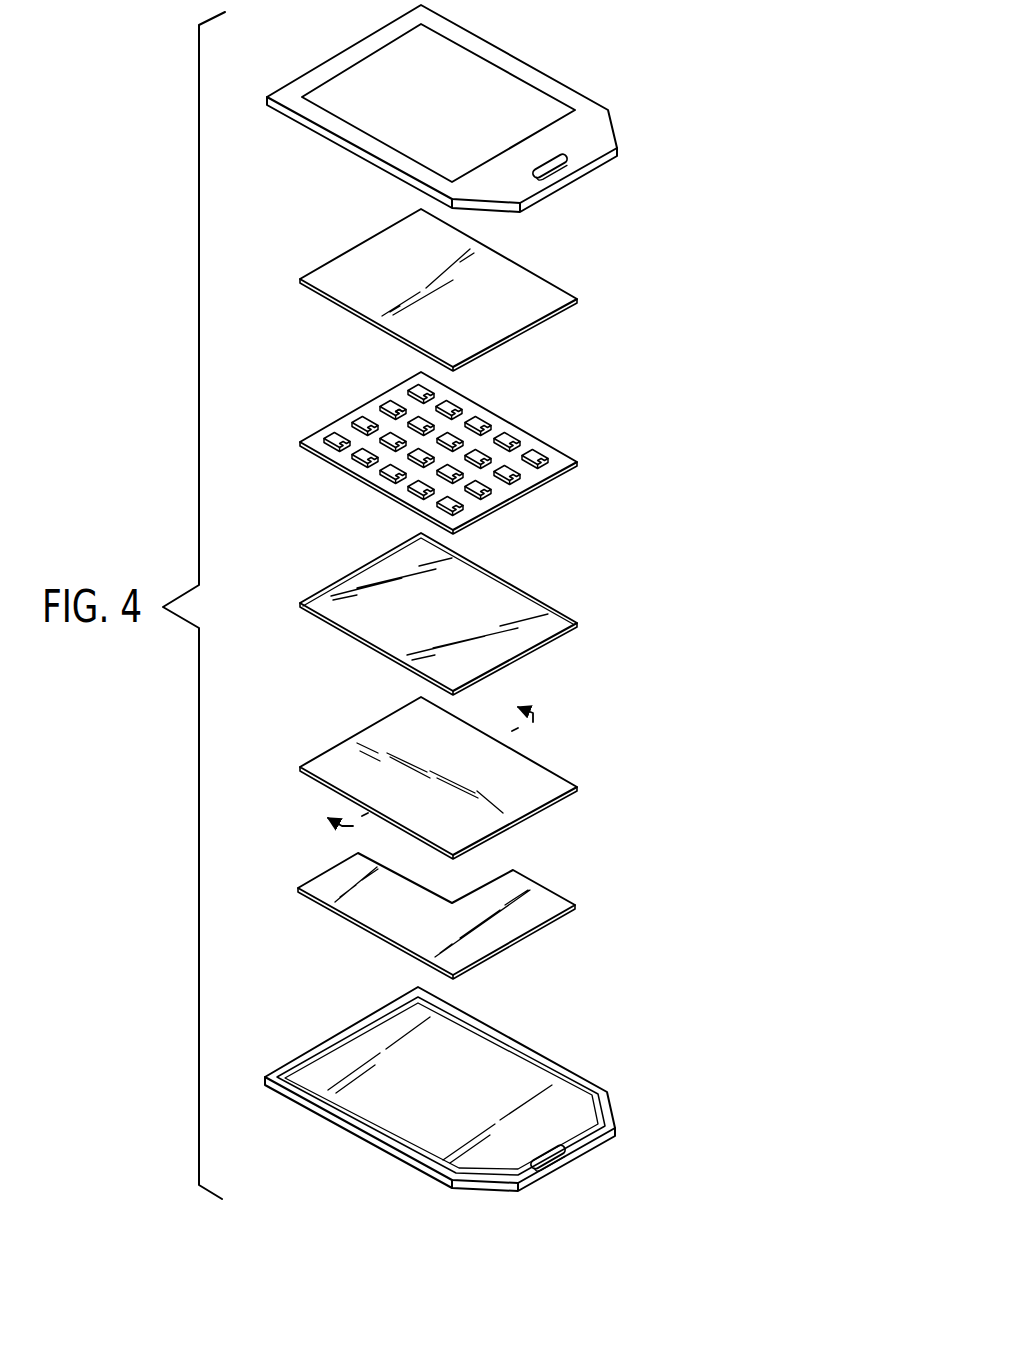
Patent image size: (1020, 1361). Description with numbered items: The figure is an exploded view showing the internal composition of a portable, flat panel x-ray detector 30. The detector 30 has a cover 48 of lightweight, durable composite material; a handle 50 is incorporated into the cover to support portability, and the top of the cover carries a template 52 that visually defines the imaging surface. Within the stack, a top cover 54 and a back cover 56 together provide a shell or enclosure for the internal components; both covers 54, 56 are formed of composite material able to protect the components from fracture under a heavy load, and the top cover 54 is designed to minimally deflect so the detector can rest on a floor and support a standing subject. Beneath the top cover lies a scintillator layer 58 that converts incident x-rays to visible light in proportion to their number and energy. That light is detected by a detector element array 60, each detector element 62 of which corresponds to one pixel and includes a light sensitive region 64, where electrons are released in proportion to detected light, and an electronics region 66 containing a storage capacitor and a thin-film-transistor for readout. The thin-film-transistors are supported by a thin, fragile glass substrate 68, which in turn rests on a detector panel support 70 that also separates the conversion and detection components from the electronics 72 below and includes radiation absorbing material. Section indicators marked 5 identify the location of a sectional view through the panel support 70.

The x-ray detector 30 is at (745, 148).
The cover 48 is at (597, 134).
The handle 50 is at (565, 161).
The template 52 is at (482, 78).
The top cover 54 is at (303, 78).
The back cover 56 is at (332, 1035).
The scintillator layer 58 is at (338, 265).
The detector element array 60 is at (313, 422).
The detector element 62 is at (383, 401).
The light sensitive region 64 is at (390, 402).
The electronics region 66 is at (370, 419).
The glass substrate 68 is at (343, 575).
The detector panel support 70 is at (347, 735).
The electronics 72 is at (308, 860).
The section line 5- 5 is at (417, 757).